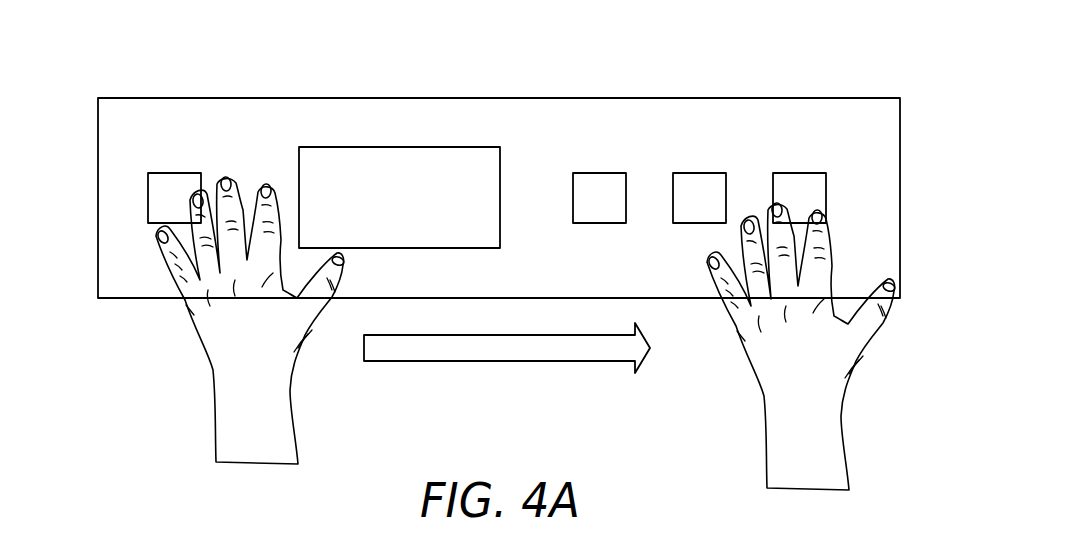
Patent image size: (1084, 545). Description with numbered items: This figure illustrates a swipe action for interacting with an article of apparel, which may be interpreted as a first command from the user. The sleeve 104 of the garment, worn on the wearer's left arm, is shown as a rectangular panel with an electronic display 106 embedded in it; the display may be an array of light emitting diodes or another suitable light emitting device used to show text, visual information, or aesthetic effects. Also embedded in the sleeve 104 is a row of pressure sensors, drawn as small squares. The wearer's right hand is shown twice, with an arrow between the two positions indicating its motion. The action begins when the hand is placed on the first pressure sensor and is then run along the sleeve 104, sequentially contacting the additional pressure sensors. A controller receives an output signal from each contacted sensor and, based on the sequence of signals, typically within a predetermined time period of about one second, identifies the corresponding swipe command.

The sleeve 104 is at (467, 98).
The electronic display 106 is at (390, 147).